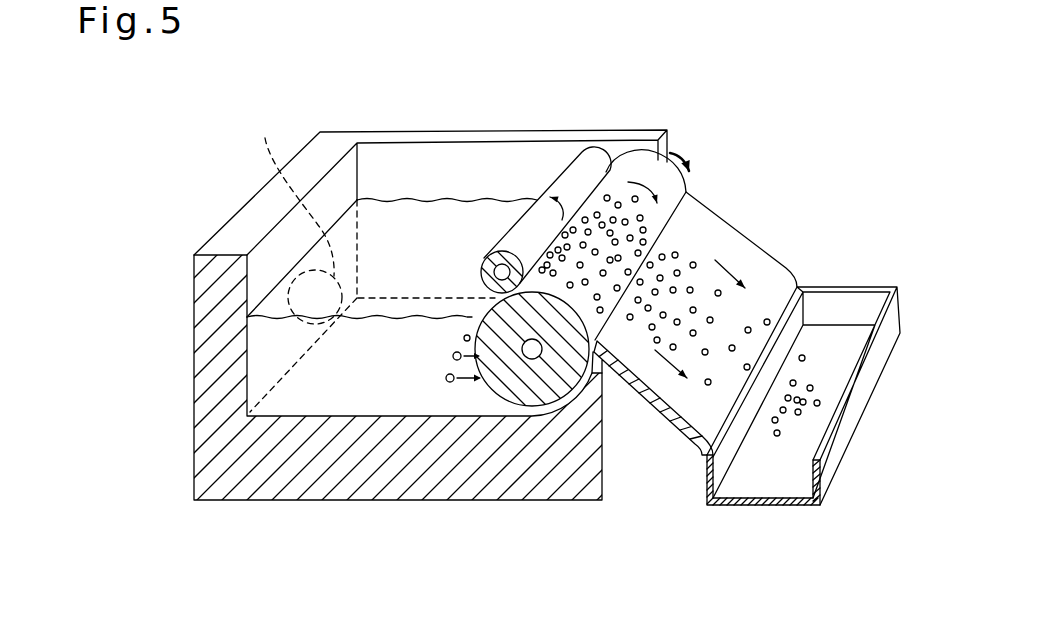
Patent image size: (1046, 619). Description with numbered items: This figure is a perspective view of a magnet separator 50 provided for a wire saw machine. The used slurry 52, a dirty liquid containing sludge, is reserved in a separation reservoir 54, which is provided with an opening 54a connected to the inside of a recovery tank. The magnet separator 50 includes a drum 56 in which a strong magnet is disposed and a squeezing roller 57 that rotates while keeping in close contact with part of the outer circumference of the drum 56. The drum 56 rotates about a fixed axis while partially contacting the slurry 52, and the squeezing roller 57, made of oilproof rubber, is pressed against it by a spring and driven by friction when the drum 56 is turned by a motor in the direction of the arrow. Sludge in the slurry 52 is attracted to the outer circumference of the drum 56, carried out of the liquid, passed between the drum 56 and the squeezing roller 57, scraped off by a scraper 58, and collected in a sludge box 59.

The magnet separator 50 is at (216, 209).
The used slurry 52 is at (373, 370).
The separation reservoir 54 is at (467, 133).
The opening 54a is at (291, 214).
The drum 56 is at (538, 383).
The squeezing roller 57 is at (593, 168).
The scraper 58 is at (724, 231).
The sludge box 59 is at (862, 404).